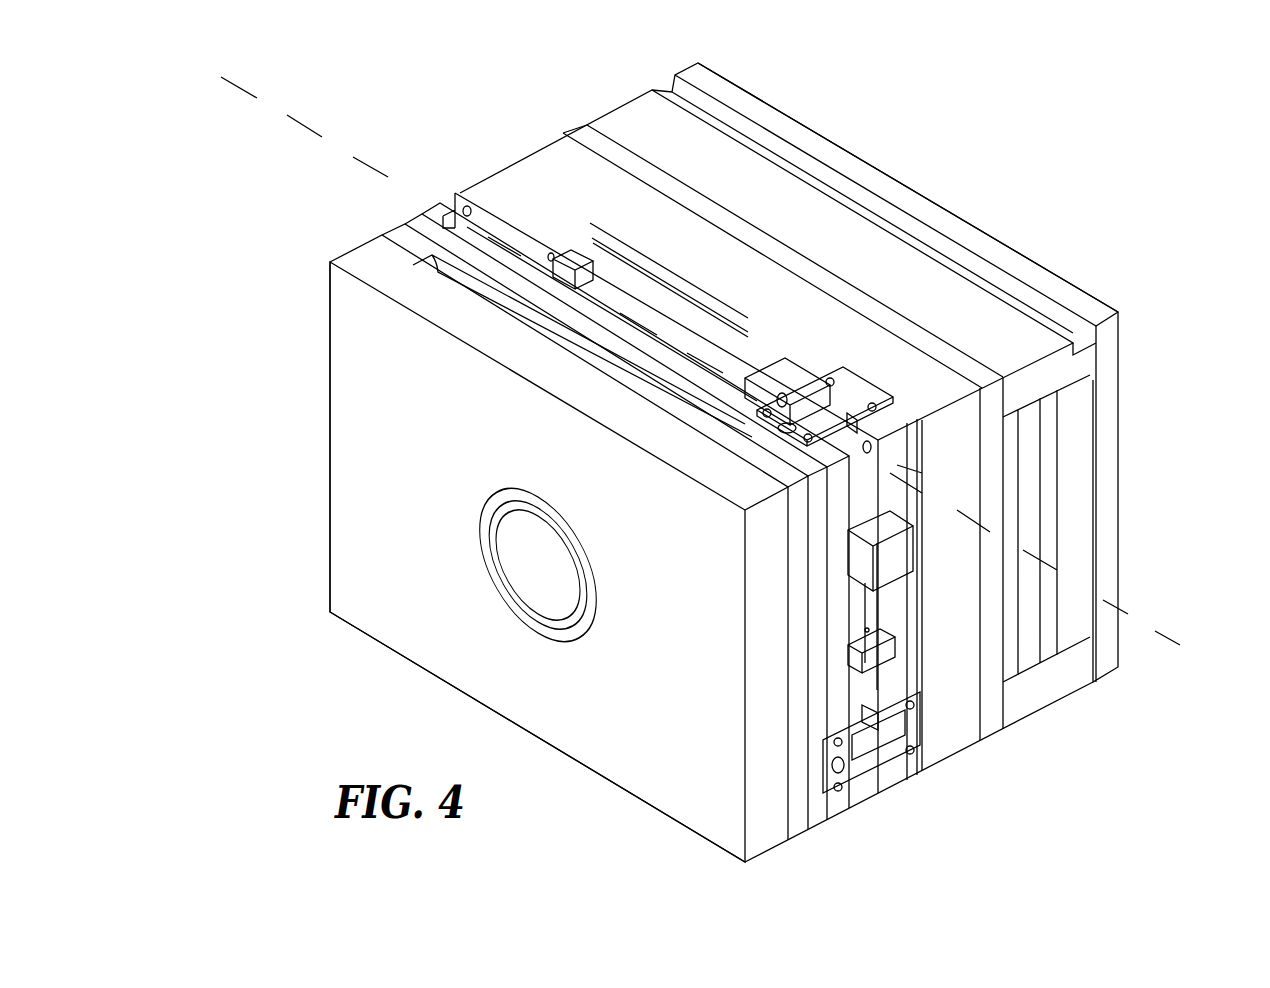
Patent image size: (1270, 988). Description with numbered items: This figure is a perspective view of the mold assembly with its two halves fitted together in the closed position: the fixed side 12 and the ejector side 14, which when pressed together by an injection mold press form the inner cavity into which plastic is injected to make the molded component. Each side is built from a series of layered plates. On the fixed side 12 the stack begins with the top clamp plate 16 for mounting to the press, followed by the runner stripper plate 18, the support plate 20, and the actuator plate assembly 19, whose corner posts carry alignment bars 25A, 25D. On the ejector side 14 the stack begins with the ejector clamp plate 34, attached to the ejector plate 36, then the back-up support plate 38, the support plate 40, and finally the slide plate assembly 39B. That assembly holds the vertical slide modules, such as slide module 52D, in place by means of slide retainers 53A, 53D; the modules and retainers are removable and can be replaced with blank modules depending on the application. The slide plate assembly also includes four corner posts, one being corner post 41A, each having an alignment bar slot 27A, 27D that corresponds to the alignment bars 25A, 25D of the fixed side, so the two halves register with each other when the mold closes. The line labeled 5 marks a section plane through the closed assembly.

The section line 5- 5 is at (715, 370).
The fixed side 12 is at (318, 442).
The ejector side 14 is at (930, 182).
The top clamp plate 16 is at (373, 267).
The runner stripper plate 18 is at (382, 238).
The actuator plate assembly 19 is at (422, 216).
The support plate 20 is at (404, 229).
The alignment bar 25A is at (835, 405).
The alignment bar 25D is at (855, 760).
The alignment bar slot 27A is at (835, 395).
The alignment bar slot 27D is at (893, 758).
The ejector clamp plate 34 is at (695, 73).
The ejector plate 36 is at (620, 115).
The back-up support plate 38 is at (993, 708).
The slide plate assembly 39B is at (498, 187).
The support plate 40 is at (942, 737).
The corner post 41A is at (907, 473).
The slide module 52D is at (865, 607).
The slide retainer 53A is at (575, 255).
The slide retainer 53D is at (883, 550).